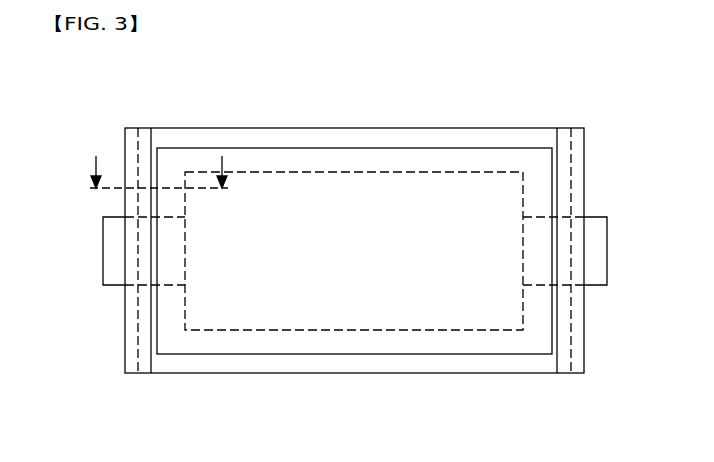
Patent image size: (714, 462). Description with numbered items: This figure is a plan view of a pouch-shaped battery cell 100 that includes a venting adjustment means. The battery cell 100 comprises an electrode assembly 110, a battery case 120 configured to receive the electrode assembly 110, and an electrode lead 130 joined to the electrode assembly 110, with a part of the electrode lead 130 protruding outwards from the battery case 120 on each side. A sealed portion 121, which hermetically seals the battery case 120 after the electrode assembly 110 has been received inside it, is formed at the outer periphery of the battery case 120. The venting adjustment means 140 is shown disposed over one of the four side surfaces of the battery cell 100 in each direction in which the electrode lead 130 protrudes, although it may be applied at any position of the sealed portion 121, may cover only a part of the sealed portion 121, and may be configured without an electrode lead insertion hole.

The pouch-shaped battery cell 100 is at (342, 68).
The electrode assembly 110 is at (439, 187).
The battery case 120 is at (452, 373).
The sealed portion 121 is at (362, 363).
The electrode lead 130 is at (110, 262).
The venting adjustment means 140 is at (125, 347).